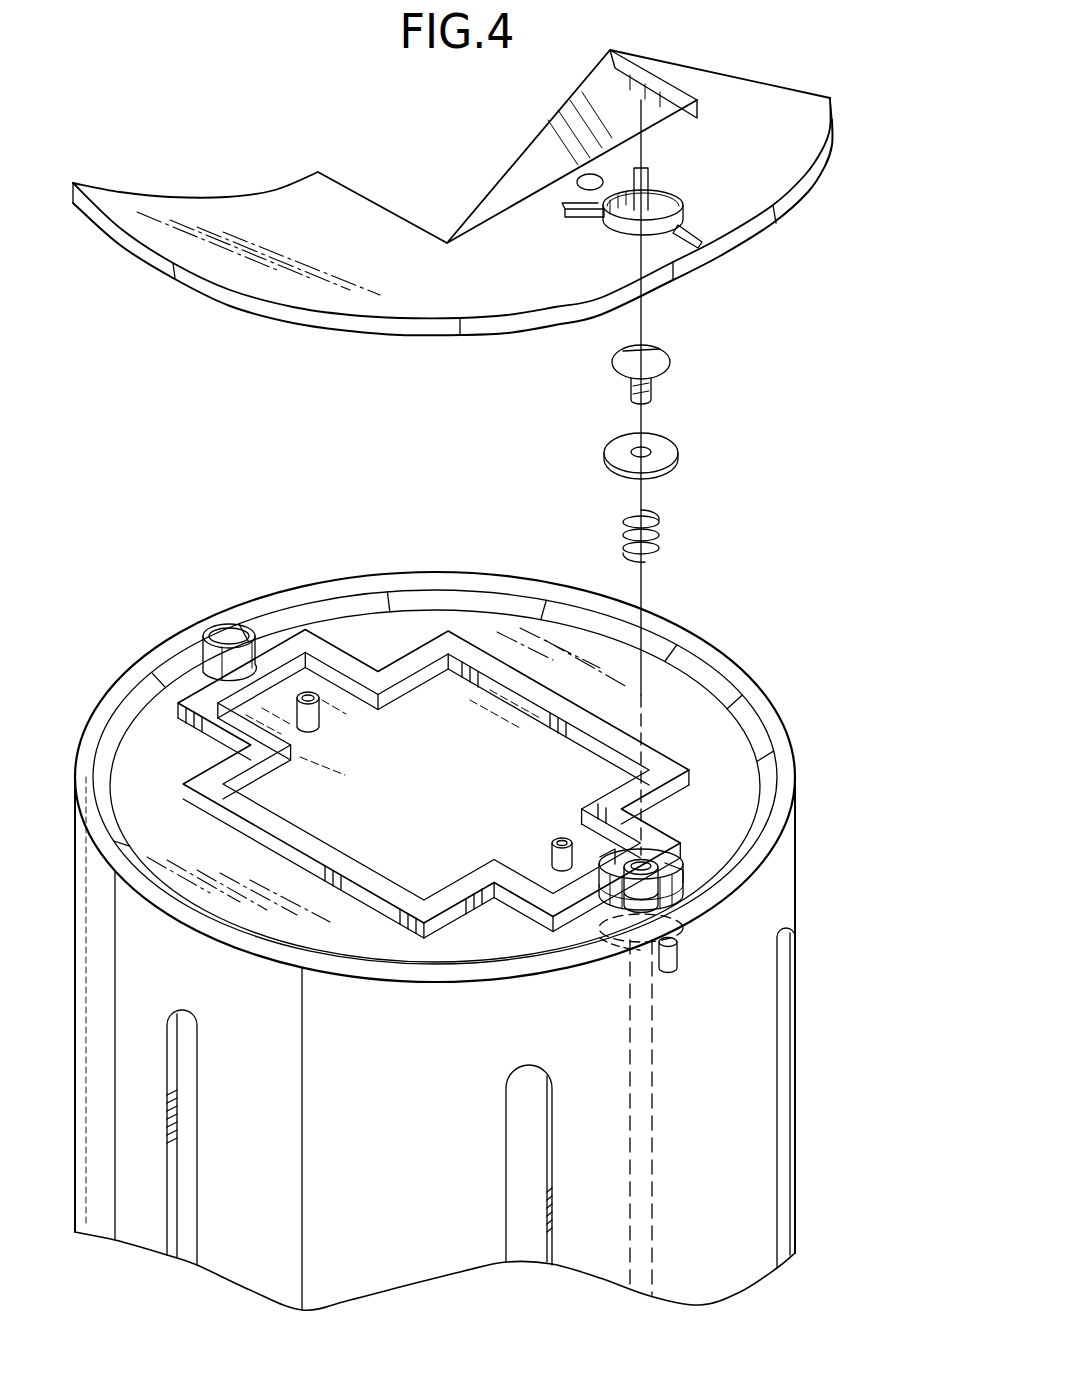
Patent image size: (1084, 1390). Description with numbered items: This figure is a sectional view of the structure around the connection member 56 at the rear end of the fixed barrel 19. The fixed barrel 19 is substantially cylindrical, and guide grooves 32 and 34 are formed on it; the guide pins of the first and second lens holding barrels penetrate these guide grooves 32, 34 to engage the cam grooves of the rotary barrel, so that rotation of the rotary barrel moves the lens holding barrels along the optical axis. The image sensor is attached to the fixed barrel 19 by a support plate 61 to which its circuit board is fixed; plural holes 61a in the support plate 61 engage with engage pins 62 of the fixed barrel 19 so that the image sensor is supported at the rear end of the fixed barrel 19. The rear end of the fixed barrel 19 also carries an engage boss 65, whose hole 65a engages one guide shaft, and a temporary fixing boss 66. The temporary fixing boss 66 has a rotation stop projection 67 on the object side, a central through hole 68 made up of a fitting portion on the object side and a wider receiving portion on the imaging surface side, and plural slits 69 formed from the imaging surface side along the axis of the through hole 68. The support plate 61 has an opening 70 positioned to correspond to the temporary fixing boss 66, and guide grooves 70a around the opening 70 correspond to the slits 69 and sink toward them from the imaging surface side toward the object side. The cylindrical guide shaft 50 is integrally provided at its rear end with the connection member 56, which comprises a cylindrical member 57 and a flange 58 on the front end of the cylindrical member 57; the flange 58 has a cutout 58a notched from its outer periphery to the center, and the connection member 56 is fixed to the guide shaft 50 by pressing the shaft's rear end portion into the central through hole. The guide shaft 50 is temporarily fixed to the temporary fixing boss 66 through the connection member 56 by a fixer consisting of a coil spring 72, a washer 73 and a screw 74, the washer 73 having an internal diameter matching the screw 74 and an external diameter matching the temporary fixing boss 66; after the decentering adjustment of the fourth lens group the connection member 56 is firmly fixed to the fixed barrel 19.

The fixed barrel 19 is at (750, 1115).
The guide groove 32 is at (197, 1150).
The guide groove 34 is at (506, 1213).
The guide shaft 50 is at (630, 1188).
The connection member 56 is at (690, 930).
The cylindrical member 57 is at (680, 856).
The flange 58 is at (637, 977).
The cutout 58a is at (662, 975).
The support plate 61 is at (278, 272).
The holes 61a is at (580, 173).
The engage pins 62 is at (553, 907).
The engage boss 65 is at (207, 628).
The hole 65a is at (234, 640).
The temporary fixing boss 66 is at (686, 845).
The rotation stop projection 67 is at (770, 958).
The through hole 68 is at (565, 848).
The slits 69 is at (640, 858).
The opening 70 is at (668, 200).
The guide grooves 70a is at (641, 168).
The coil spring 72 is at (663, 550).
The washer 73 is at (683, 465).
The screw 74 is at (680, 378).